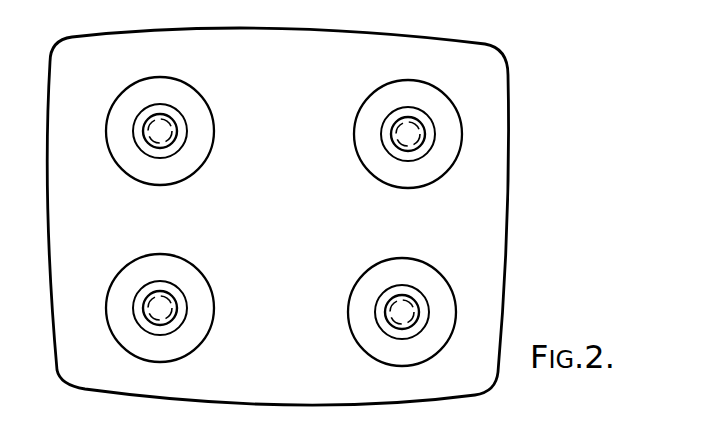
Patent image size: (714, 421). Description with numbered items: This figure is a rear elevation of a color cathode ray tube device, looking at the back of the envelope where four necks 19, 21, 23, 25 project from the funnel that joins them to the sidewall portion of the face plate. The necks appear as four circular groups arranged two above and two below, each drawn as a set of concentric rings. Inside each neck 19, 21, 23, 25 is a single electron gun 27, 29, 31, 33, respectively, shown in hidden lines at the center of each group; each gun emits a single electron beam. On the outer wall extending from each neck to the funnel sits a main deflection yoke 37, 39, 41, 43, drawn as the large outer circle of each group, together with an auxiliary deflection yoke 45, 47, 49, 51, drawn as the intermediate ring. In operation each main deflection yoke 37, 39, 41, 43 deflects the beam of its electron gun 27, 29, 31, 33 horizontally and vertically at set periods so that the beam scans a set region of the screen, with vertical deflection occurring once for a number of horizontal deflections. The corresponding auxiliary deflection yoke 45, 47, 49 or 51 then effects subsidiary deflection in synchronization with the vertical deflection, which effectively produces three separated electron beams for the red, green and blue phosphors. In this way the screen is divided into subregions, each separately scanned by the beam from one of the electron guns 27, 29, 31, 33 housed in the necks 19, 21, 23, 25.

The neck 19 is at (397, 118).
The neck 21 is at (173, 112).
The neck 23 is at (392, 293).
The neck 25 is at (165, 292).
The electron gun 27 is at (397, 140).
The electron gun 29 is at (155, 138).
The electron gun 31 is at (385, 308).
The electron gun 33 is at (150, 300).
The main deflection yoke 37 is at (433, 167).
The main deflection yoke 39 is at (188, 160).
The main deflection yoke 41 is at (365, 338).
The main deflection yoke 43 is at (187, 347).
The auxiliary deflection yoke 45 is at (430, 118).
The auxiliary deflection yoke 47 is at (143, 112).
The auxiliary deflection yoke 49 is at (423, 310).
The auxiliary deflection yoke 51 is at (182, 307).